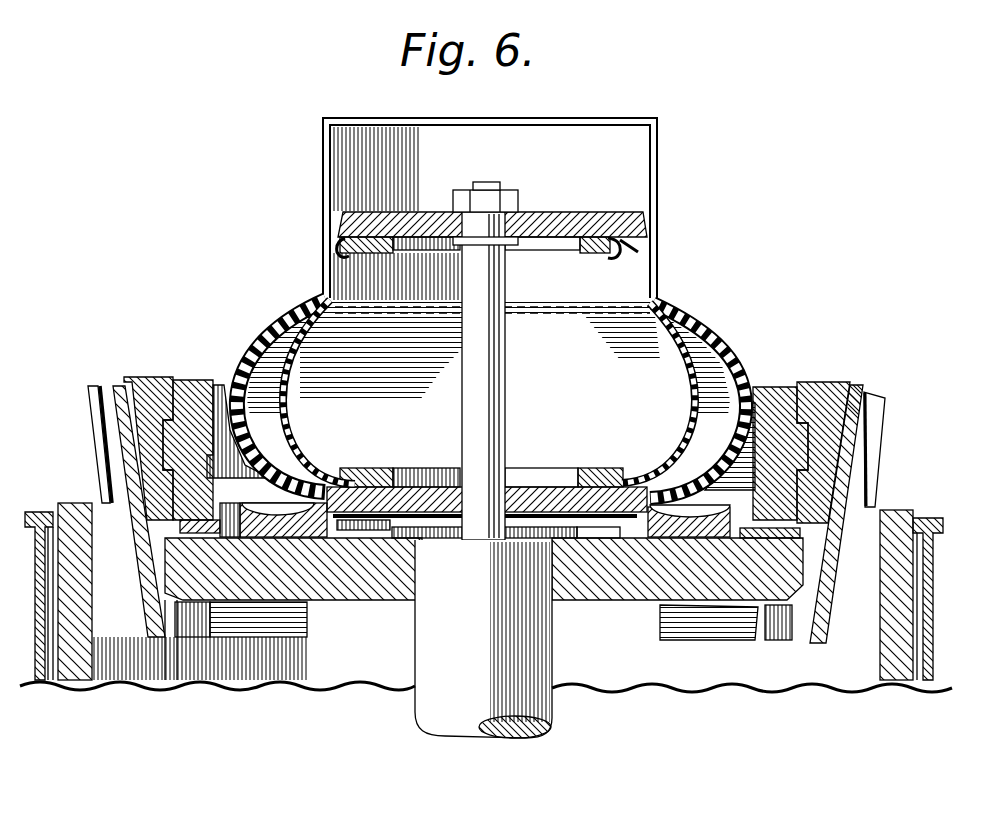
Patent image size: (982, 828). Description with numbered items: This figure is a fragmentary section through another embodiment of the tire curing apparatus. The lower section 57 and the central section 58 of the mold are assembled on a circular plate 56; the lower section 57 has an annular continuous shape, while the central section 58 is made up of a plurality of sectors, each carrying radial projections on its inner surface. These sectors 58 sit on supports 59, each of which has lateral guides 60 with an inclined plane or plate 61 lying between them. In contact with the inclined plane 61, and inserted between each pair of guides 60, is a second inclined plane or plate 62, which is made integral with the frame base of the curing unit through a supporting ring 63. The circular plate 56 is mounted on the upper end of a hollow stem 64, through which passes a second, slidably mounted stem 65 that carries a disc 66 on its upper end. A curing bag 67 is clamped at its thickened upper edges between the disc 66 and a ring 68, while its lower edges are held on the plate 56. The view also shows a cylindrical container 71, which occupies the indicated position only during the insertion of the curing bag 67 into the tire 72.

The circular plate 56 is at (657, 592).
The lower section 57 is at (638, 598).
The central section 58 is at (213, 380).
The support 59 is at (150, 376).
The lateral guide 60 is at (887, 403).
The inclined plane 61 is at (104, 387).
The second inclined plane 62 is at (113, 458).
The supporting ring 63 is at (898, 516).
The hollow stem 64 is at (433, 710).
The second slidably mounted stem 65 is at (497, 383).
The disc 66 is at (570, 218).
The curing bag 67 is at (708, 352).
The ring 68 is at (600, 250).
The cylindrical container 71 is at (321, 153).
The tire 72 is at (283, 333).